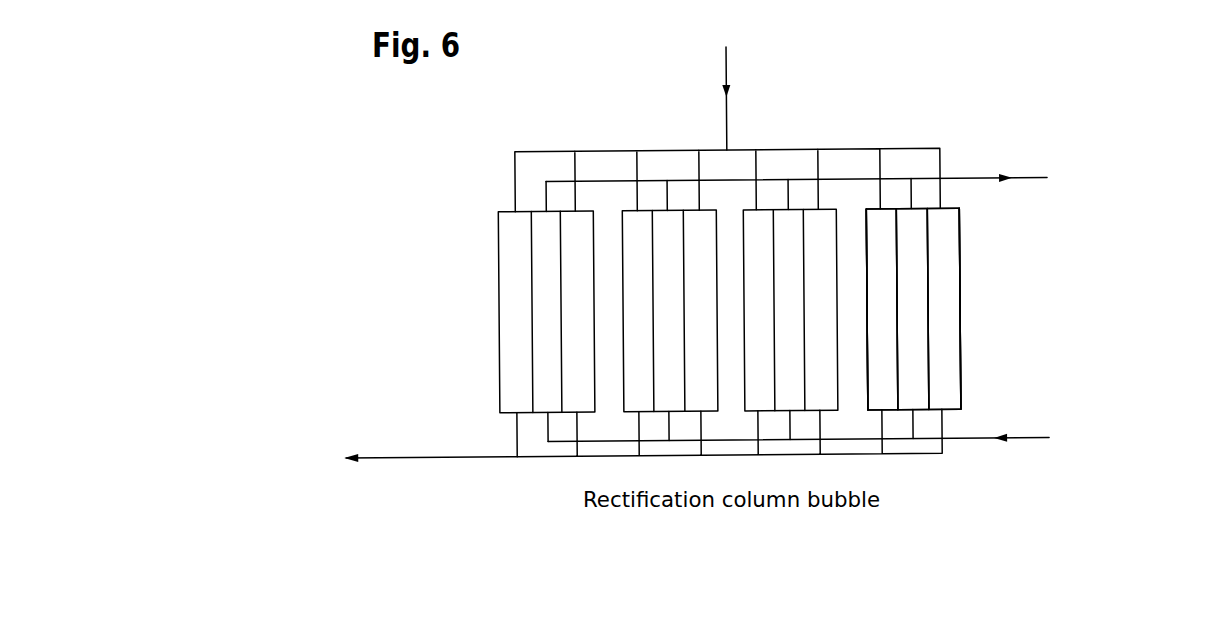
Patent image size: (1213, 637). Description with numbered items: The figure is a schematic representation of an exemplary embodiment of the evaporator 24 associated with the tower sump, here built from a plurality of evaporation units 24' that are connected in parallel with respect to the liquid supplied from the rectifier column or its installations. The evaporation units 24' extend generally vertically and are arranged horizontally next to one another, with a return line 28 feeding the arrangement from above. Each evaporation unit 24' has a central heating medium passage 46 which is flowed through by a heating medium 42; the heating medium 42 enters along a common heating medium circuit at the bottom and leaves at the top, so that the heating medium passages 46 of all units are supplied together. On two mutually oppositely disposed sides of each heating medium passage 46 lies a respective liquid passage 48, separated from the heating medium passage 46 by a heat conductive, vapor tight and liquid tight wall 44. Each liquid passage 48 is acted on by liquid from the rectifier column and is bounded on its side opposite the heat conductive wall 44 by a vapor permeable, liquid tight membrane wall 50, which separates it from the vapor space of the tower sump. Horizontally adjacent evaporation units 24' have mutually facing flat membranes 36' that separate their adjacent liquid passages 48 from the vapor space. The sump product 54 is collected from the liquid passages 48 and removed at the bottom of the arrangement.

The evaporator 24 is at (738, 242).
The evaporation unit 24' is at (736, 361).
The return line 28 is at (725, 62).
The flat membrane 36' is at (945, 309).
The heating medium 42 is at (976, 178).
The heat conductive wall 44 is at (930, 350).
The heating medium passage 46 is at (910, 390).
The liquid passage 48 is at (880, 232).
The membrane wall 50 is at (962, 283).
The sump product 54 is at (389, 459).